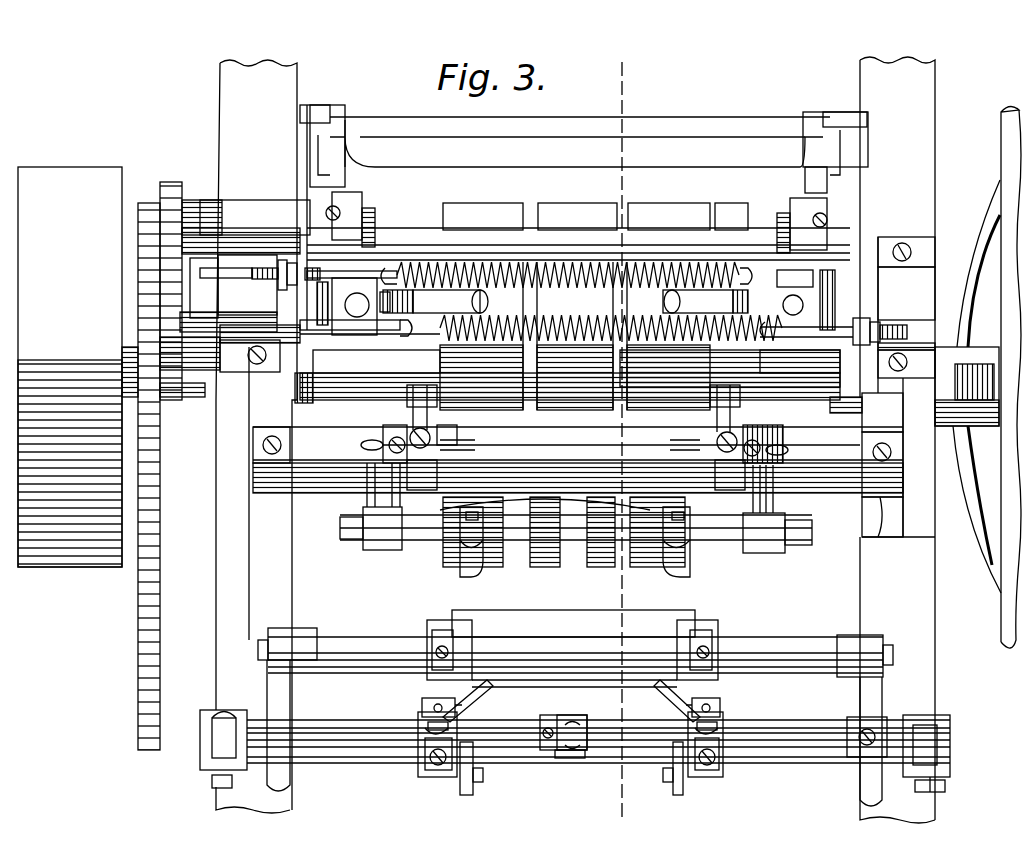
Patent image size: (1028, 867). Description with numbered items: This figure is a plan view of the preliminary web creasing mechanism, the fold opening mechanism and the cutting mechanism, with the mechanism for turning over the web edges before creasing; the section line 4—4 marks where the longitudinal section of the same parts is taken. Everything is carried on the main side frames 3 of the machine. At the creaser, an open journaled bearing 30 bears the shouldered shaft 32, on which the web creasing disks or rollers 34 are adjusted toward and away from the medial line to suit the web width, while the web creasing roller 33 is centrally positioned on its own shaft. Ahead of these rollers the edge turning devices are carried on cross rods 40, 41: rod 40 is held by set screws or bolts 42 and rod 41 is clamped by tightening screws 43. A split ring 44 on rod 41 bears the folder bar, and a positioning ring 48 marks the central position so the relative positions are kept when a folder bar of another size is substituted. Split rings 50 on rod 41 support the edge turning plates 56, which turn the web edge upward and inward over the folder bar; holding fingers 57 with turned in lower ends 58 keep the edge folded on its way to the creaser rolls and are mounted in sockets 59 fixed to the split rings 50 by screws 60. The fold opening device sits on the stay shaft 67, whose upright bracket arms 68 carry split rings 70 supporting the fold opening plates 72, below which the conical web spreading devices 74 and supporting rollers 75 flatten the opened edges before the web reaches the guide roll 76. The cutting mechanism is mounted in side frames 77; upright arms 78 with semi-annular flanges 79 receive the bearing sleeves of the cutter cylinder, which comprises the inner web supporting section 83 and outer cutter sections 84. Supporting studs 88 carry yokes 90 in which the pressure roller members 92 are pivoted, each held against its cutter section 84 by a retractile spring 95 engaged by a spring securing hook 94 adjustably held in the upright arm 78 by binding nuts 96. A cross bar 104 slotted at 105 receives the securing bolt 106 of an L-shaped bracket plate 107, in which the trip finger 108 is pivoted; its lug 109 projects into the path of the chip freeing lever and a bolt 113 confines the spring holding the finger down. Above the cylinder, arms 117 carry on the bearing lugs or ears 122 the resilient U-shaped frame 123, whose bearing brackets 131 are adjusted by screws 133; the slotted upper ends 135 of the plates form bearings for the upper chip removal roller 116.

The main side frames 3 is at (930, 595).
The section line 4 is at (619, 437).
The open journaled bearing 30 is at (305, 632).
The shouldered shaft 32 is at (372, 648).
The web creasing roller 33 is at (540, 622).
The web creasing disks or rollers 34 is at (460, 628).
The cross rod 40 is at (815, 768).
The cross rod 41 is at (800, 730).
The set screws or bolts 42 is at (945, 786).
The tightening screws 43 is at (930, 728).
The split ring 44 is at (580, 730).
The positioning ring 48 is at (562, 760).
The split ring 50 is at (418, 760).
The edge turning plates 56 is at (470, 790).
The holding fingers 57 is at (478, 695).
The turned in lower ends 58 is at (573, 709).
The sockets 59 is at (430, 702).
The screws 60 is at (430, 735).
The stay shaft 67 is at (190, 395).
The upright bracket arms 68 is at (370, 498).
The split rings 70 is at (462, 540).
The fold opening plates 72 is at (470, 565).
The web spreading devices 74 is at (495, 555).
The supporting rollers 75 is at (595, 555).
The guide roll 76 is at (553, 468).
The side frames 77 is at (265, 475).
The upright arms 78 is at (285, 278).
The semi-annular flanges 79 is at (250, 366).
The inner web supporting section 83 is at (577, 205).
The outer cutter sections 84 is at (448, 215).
The supporting studs 88 is at (357, 317).
The yokes 90 is at (740, 248).
The pressure roller members 92 is at (565, 297).
The spring securing hooks 94 is at (345, 320).
The retractile spring 95 is at (468, 270).
The binding nuts 96 is at (268, 268).
The cross bar 104 is at (318, 470).
The slot 105 is at (383, 440).
The securing bolt 106 is at (365, 447).
The L-shaped bracket plate 107 is at (390, 438).
The trip finger 108 is at (418, 418).
The lug 109 is at (438, 405).
The bolt 113 is at (460, 443).
The upper chip removal roller 116 is at (655, 240).
The arm 117 is at (295, 175).
The bearing lugs or ears 122 is at (338, 135).
The U-shaped frame 123 is at (664, 142).
The bearing bracket 131 is at (355, 212).
The screw 133 is at (325, 213).
The upper ends of plates 135 is at (378, 225).